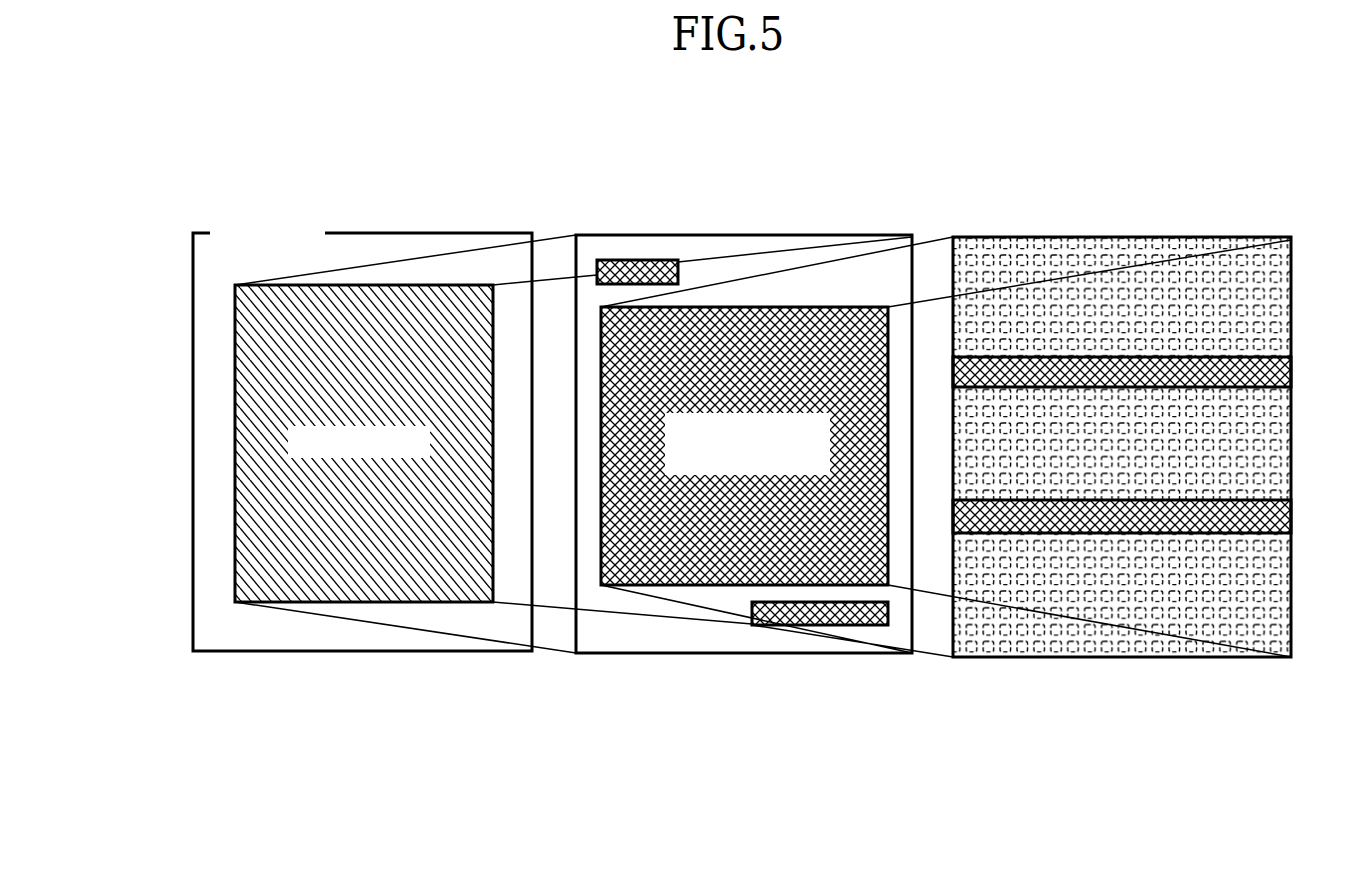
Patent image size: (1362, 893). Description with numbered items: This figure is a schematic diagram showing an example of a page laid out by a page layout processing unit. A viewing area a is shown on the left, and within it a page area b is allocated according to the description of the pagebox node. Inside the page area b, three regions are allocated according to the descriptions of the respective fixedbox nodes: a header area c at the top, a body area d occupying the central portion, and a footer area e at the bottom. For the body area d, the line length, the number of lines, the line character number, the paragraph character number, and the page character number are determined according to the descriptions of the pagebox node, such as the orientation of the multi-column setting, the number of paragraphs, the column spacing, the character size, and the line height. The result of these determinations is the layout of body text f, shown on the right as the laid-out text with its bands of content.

The viewing area a is at (362, 232).
The page area b is at (250, 488).
The header area c is at (607, 257).
The body area d is at (742, 305).
The footer area e is at (827, 627).
The layout of body text f is at (1292, 441).